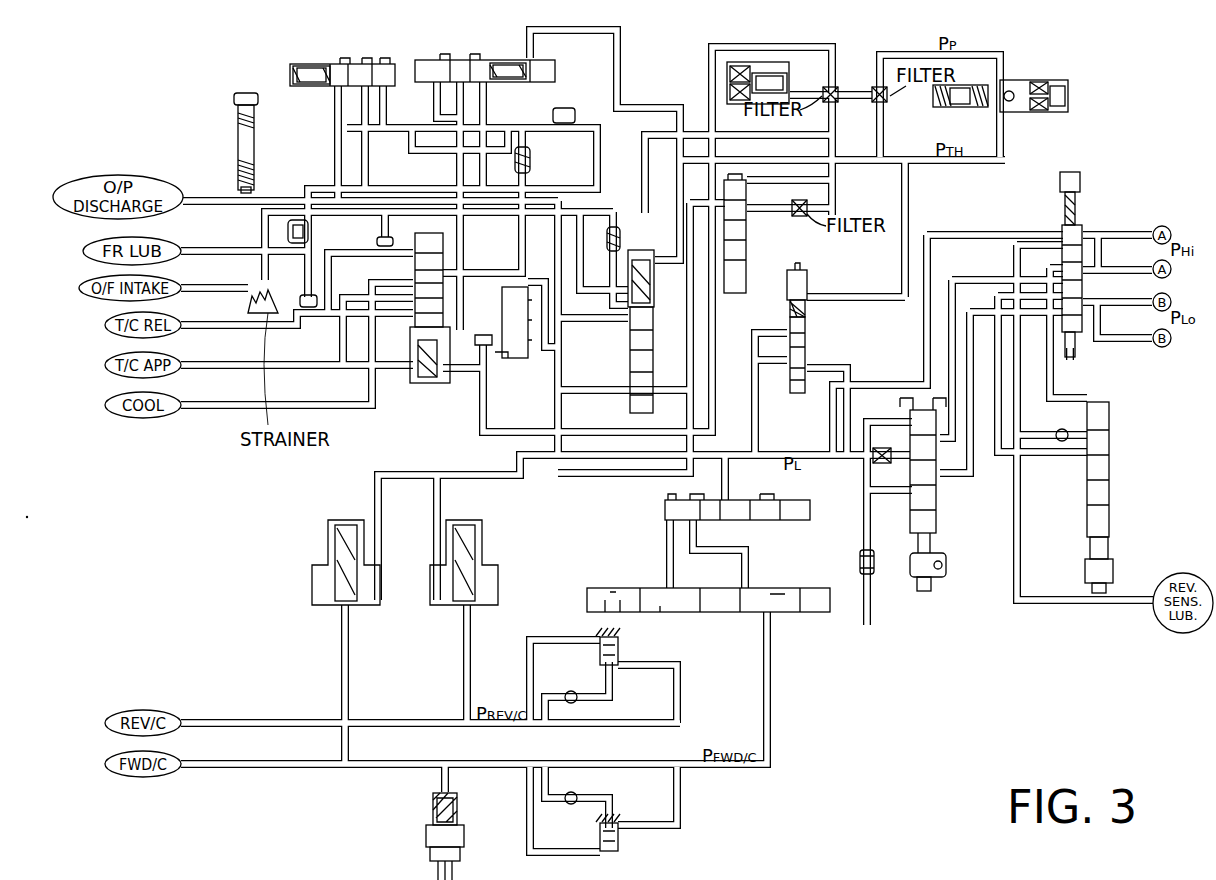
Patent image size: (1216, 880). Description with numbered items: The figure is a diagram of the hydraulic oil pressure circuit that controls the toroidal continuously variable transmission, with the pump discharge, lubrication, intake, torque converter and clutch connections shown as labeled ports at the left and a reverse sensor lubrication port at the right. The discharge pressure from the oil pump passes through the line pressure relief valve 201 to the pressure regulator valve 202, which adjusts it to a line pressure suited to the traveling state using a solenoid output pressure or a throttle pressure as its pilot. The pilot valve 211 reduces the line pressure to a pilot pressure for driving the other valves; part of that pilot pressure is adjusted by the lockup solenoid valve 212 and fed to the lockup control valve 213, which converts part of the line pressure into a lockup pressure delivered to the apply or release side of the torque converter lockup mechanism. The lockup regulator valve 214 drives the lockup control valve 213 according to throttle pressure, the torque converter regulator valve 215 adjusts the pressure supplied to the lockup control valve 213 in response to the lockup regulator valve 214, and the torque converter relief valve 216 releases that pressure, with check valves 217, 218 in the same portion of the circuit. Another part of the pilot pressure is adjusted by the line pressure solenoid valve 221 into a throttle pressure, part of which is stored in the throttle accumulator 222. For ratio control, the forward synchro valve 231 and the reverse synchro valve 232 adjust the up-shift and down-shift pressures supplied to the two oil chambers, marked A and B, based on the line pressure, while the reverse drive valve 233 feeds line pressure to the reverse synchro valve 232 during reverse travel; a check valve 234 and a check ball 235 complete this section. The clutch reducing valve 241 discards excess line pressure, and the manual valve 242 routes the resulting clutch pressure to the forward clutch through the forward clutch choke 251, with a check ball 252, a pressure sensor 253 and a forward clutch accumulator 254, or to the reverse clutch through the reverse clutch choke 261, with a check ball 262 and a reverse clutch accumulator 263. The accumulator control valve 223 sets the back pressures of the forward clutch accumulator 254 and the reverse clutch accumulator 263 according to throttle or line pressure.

The line pressure relief valve 201 is at (226, 136).
The pressure regulator valve 202 is at (653, 243).
The pilot valve 211 is at (754, 254).
The lockup solenoid valve 212 is at (797, 66).
The lockup control valve 213 is at (425, 403).
The lockup regulator valve 214 is at (464, 57).
The torque converter regulator valve 215 is at (326, 57).
The torque converter relief valve 216 is at (521, 370).
The check valve 217 is at (630, 228).
The check valve 218 is at (541, 163).
The line pressure solenoid valve 221 is at (1039, 66).
The throttle accumulator 222 is at (957, 117).
The accumulator control valve 223 is at (819, 283).
The forward synchro valve 231 is at (948, 555).
The reverse synchro valve 232 is at (1118, 458).
The reverse drive valve 233 is at (1093, 221).
The check valve 234 is at (883, 573).
The check ball 235 is at (1057, 422).
The clutch reducing valve 241 is at (654, 515).
The manual valve 242 is at (646, 576).
The forward clutch choke 251 is at (630, 841).
The check ball 252 is at (567, 779).
The pressure sensor 253 is at (413, 832).
The forward clutch accumulator 254 is at (318, 531).
The reverse clutch choke 261 is at (630, 653).
The check ball 262 is at (585, 694).
The reverse clutch accumulator 263 is at (496, 542).